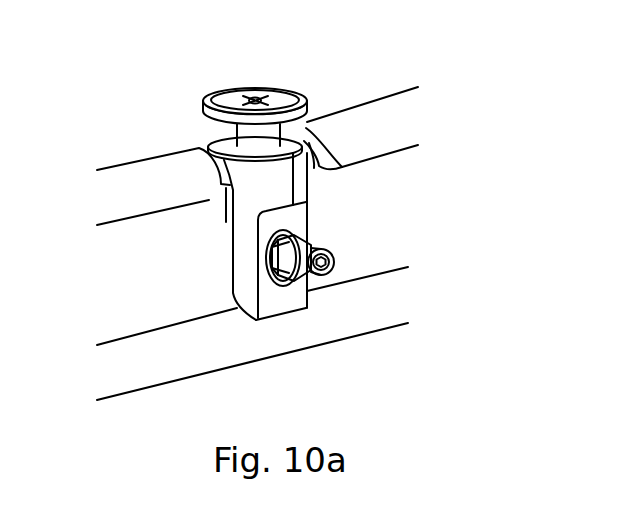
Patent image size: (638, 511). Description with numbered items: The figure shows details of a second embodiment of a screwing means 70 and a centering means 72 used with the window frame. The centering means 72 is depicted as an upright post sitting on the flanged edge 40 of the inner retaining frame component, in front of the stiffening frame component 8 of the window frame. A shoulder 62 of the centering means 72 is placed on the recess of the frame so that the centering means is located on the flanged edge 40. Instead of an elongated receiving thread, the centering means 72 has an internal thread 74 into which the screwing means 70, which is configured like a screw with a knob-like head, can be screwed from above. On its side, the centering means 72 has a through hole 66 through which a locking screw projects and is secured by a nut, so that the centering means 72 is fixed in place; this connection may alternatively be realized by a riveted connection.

The stiffening frame component 8 is at (395, 223).
The flanged edge 40 is at (378, 116).
The shoulder 62 is at (210, 202).
The through hole 66 is at (263, 290).
The screwing means 70 is at (220, 106).
The centering means 72 is at (247, 218).
The internal thread 74 is at (277, 145).